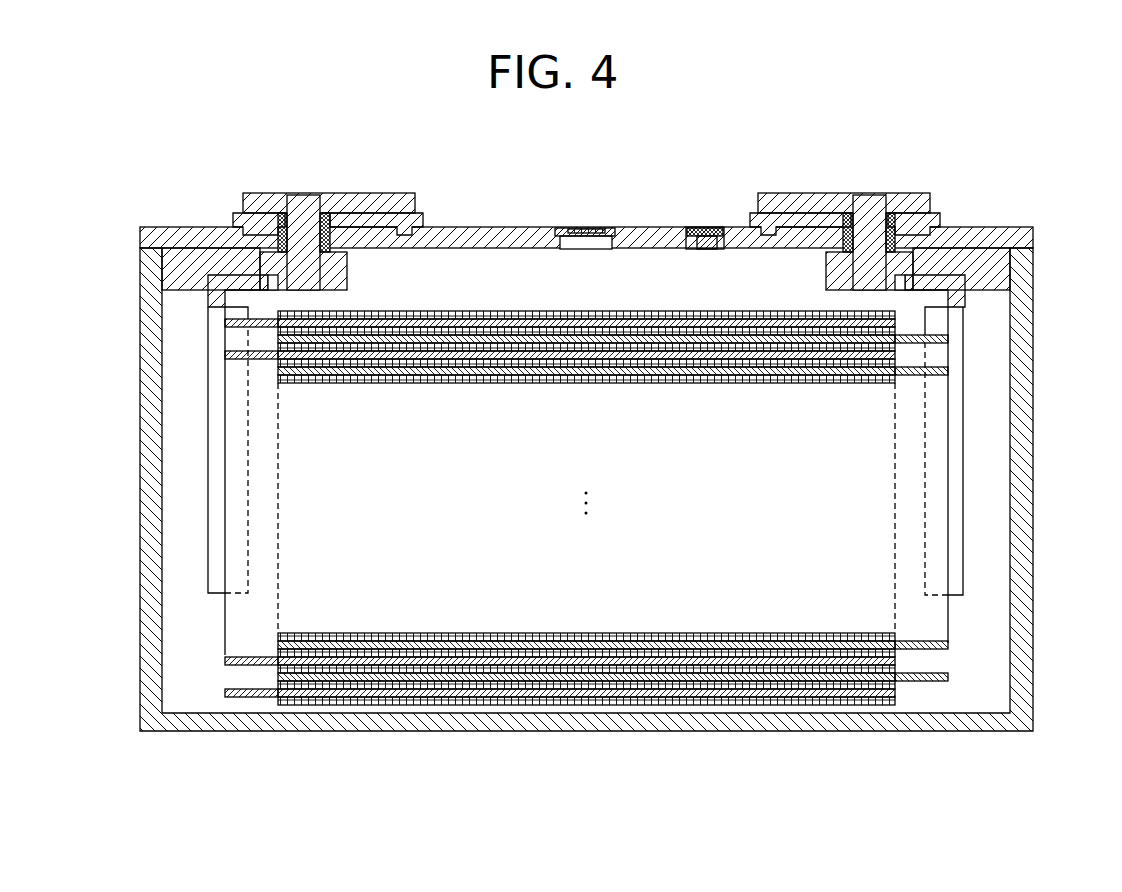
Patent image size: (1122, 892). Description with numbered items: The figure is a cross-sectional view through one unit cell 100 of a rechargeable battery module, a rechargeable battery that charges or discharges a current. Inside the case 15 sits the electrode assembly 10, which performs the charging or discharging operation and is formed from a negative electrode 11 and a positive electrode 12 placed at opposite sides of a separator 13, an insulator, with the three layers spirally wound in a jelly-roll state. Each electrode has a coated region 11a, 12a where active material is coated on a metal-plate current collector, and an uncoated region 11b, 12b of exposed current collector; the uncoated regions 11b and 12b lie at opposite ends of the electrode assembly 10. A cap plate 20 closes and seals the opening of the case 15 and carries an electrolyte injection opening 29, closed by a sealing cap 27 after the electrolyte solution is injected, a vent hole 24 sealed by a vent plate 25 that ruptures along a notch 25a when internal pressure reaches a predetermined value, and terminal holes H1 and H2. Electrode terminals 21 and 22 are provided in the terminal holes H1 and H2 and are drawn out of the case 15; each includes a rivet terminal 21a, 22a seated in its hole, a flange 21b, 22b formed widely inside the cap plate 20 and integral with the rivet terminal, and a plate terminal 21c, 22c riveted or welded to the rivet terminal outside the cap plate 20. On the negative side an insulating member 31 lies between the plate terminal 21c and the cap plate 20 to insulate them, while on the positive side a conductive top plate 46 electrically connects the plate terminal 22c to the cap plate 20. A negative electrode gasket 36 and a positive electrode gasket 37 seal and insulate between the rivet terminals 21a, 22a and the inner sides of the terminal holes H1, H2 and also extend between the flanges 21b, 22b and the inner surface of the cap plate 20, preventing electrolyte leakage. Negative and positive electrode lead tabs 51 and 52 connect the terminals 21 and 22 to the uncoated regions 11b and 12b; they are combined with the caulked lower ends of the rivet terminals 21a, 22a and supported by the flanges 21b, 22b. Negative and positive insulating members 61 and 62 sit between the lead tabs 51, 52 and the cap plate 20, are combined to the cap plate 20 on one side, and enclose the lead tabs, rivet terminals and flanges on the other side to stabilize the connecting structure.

The unit cell 100 is at (661, 136).
The electrode assembly 10 is at (589, 566).
The negative electrode 11 is at (560, 567).
The coated region of negative electrode 11a is at (378, 697).
The uncoated region of negative electrode 11b is at (251, 549).
The positive electrode 12 is at (615, 578).
The coated region of positive electrode 12a is at (820, 650).
The uncoated region of positive electrode 12b is at (924, 562).
The separator 13 is at (602, 700).
The case 15 is at (1025, 420).
The cap plate 20 is at (490, 236).
The negative electrode terminal 21 is at (303, 184).
The rivet terminal of negative terminal 21a is at (303, 272).
The flange of negative terminal 21b is at (366, 240).
The plate terminal of negative terminal 21c is at (331, 222).
The positive electrode terminal 22 is at (870, 184).
The rivet terminal of positive terminal 22a is at (870, 272).
The flange of positive terminal 22b is at (833, 240).
The plate terminal of positive terminal 22c is at (850, 226).
The vent hole 24 is at (586, 247).
The vent plate 25 is at (607, 229).
The notch 25a is at (576, 229).
The sealing cap 27 is at (708, 230).
The electrolyte injection opening 29 is at (692, 228).
The insulating member 31 is at (400, 197).
The negative electrode gasket 36 is at (233, 230).
The positive electrode gasket 37 is at (940, 230).
The top plate 46 is at (797, 214).
The negative electrode lead tab 51 is at (200, 428).
The positive electrode lead tab 52 is at (972, 560).
The negative insulating member 61 is at (180, 264).
The positive insulating member 62 is at (995, 265).
The terminal hole H1 is at (284, 216).
The terminal hole H2 is at (892, 216).